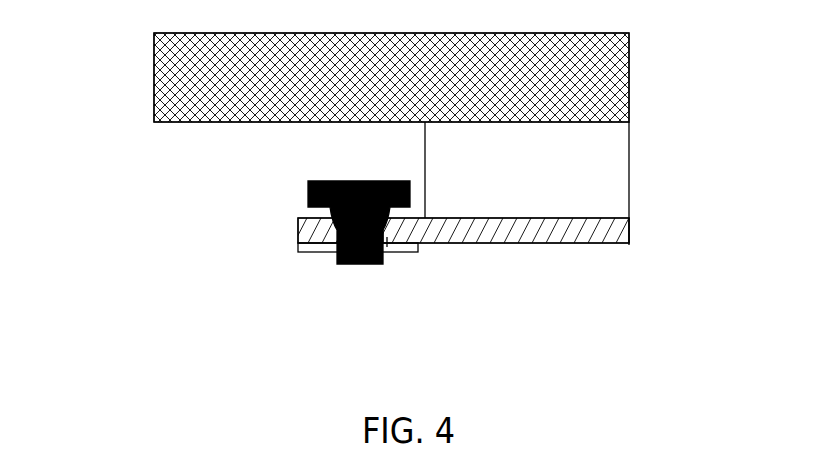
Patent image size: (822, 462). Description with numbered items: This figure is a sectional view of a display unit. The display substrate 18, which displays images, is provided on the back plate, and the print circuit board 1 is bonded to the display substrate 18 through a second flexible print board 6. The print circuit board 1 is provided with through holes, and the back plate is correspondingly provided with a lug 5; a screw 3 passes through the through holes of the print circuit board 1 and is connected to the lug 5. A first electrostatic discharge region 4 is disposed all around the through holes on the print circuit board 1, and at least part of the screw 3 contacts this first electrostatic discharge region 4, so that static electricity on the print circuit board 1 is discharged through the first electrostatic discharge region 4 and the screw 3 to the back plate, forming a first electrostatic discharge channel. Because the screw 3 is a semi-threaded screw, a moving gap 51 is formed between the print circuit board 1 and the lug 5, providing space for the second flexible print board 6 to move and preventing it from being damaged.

The display substrate 18 is at (153, 77).
The second flexible print board 6 is at (610, 162).
The print circuit board 1 is at (298, 237).
The screw 3 is at (307, 195).
The first electrostatic discharge region 4 is at (397, 236).
The lug 5 is at (318, 253).
The moving gap 51 is at (388, 247).